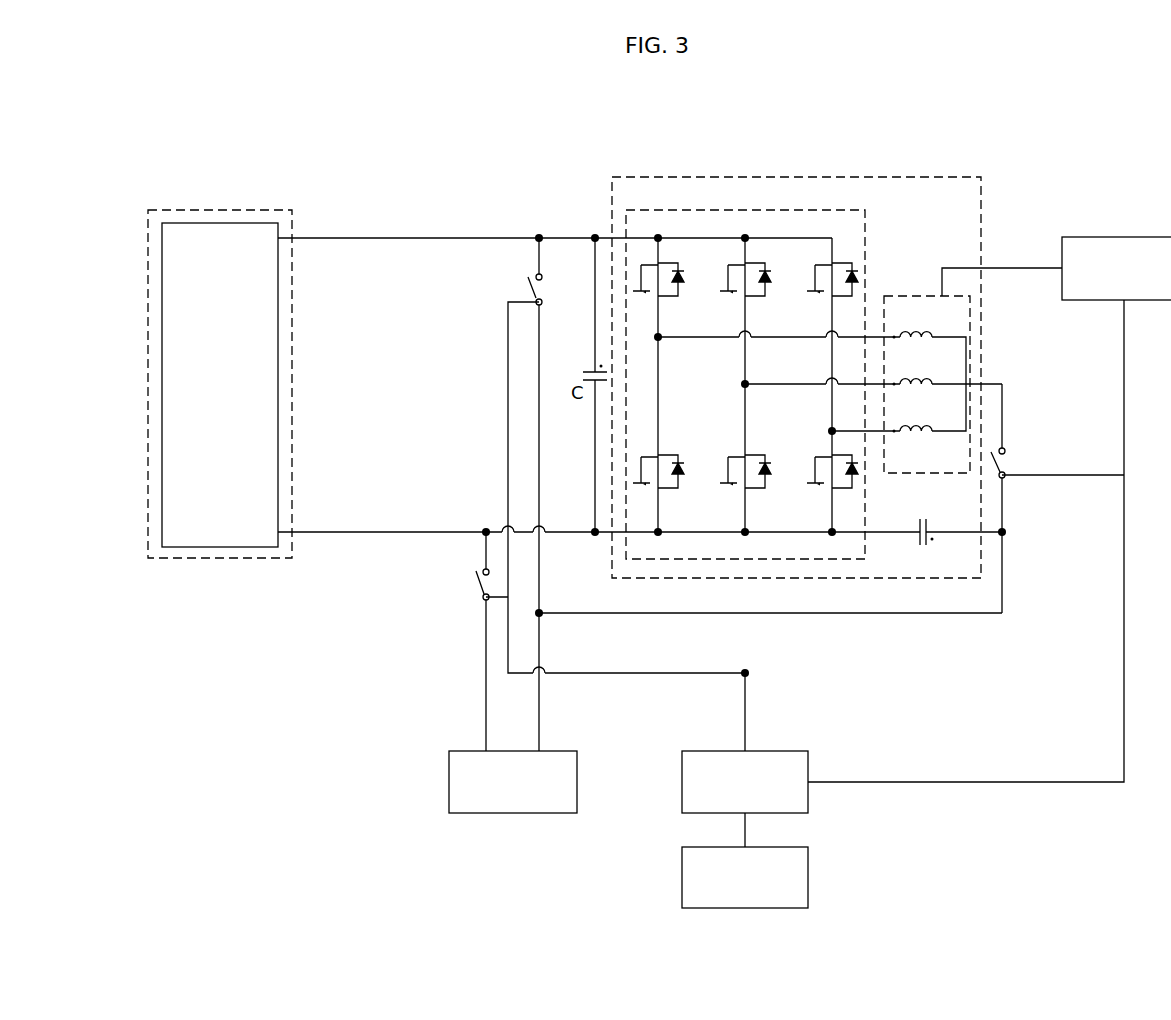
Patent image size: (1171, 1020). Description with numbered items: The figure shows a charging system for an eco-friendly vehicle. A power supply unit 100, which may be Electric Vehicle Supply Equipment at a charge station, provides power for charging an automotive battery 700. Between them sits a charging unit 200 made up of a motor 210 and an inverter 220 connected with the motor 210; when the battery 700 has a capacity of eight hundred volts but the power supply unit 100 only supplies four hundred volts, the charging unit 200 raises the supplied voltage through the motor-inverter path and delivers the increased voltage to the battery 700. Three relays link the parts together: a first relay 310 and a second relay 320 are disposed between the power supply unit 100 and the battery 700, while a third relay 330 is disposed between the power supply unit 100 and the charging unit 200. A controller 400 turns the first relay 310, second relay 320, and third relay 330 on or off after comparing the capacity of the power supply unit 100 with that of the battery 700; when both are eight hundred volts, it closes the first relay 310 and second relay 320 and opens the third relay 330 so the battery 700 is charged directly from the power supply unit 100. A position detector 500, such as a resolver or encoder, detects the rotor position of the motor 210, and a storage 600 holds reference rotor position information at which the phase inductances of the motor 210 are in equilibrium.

The power supply unit 100 is at (513, 782).
The charging unit 200 is at (872, 177).
The motor 210 is at (917, 296).
The inverter 220 is at (790, 209).
The first relay 310 is at (526, 290).
The second relay 320 is at (1006, 451).
The third relay 330 is at (477, 585).
The controller 400 is at (745, 760).
The position detector 500 is at (989, 509).
The storage 600 is at (745, 877).
The battery 700 is at (220, 384).